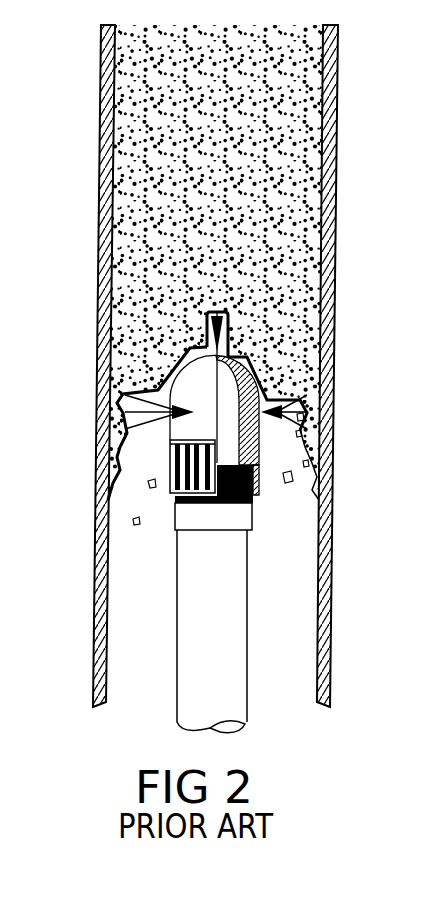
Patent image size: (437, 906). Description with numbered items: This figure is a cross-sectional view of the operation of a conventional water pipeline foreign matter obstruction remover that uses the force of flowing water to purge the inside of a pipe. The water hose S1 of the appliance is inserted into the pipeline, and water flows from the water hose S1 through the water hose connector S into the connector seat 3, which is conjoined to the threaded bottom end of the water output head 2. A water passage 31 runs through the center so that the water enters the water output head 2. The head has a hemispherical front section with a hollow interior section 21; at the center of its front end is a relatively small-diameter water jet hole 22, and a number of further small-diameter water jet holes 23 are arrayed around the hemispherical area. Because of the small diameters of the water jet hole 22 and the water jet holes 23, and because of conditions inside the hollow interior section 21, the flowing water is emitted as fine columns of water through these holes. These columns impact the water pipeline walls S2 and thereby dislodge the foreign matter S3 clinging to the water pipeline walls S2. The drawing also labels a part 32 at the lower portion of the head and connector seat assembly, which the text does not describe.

The water output head 2 is at (160, 368).
The hollow interior section 21 is at (222, 383).
The water jet hole 22 is at (226, 348).
The water jet holes 23 is at (122, 397).
The connector seat 3 is at (172, 469).
The water passage 31 is at (258, 457).
The seal ring 32 is at (260, 485).
The water hose connector S is at (183, 516).
The water hose S1 is at (210, 570).
The water pipeline walls S2 is at (333, 242).
The foreign matter S3 is at (160, 247).